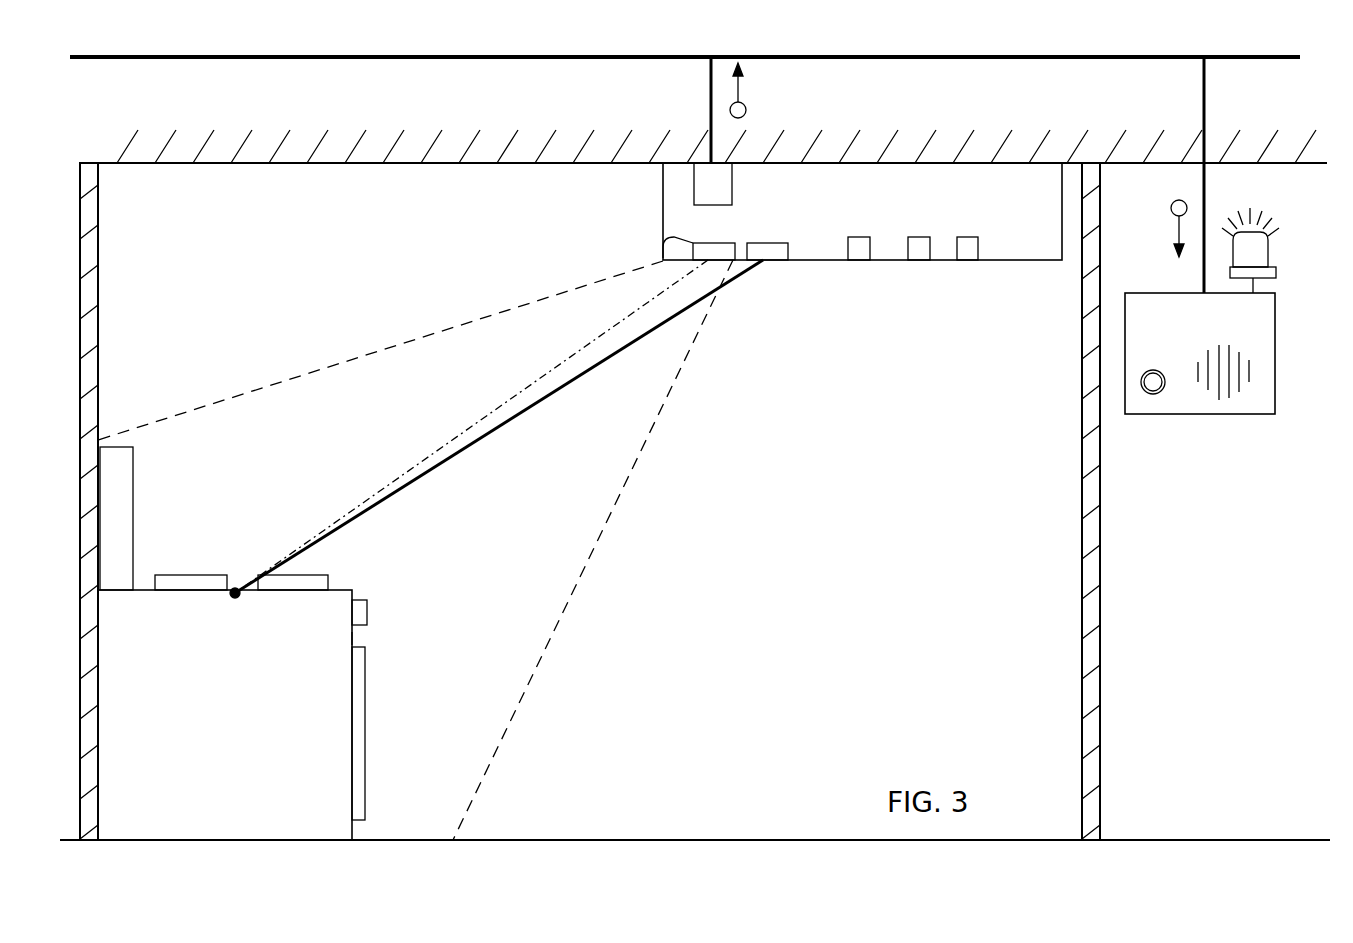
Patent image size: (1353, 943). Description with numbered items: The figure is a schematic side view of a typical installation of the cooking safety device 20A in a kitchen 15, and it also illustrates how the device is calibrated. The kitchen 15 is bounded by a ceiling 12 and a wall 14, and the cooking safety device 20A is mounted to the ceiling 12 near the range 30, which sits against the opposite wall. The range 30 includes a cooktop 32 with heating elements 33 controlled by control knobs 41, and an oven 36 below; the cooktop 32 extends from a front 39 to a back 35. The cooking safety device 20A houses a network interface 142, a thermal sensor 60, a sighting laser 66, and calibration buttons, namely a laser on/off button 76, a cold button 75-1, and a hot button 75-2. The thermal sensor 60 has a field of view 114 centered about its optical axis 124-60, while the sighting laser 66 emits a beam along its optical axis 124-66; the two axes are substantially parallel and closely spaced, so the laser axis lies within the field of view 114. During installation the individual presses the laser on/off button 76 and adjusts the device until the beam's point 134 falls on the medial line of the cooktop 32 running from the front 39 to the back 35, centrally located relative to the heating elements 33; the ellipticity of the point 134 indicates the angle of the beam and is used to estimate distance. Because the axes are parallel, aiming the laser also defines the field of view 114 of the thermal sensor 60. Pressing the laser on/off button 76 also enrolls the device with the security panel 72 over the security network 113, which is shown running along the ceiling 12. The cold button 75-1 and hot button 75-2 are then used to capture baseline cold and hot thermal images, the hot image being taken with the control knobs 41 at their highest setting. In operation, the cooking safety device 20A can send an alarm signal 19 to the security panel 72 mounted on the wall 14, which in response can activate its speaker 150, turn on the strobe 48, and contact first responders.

The ceiling 12 is at (698, 110).
The wall 14 is at (1100, 497).
The kitchen 15 is at (860, 541).
The security network 113 is at (555, 58).
The alarm signal 19 is at (738, 92).
The cooking safety device 20A is at (831, 251).
The network interface 142 is at (732, 193).
The thermal sensor 60 is at (657, 241).
The sighting laser 66 is at (760, 243).
The laser on/off button 76 is at (857, 260).
The cold button 75-1 is at (917, 260).
The hot button 75-2 is at (967, 260).
The field of view 114 is at (705, 318).
The optical axis of thermal sensor 124-60 is at (490, 400).
The optical axis of sighting laser 124-66 is at (447, 458).
The security panel 72 is at (1222, 261).
The speaker 150 is at (1219, 385).
The strobe 48 is at (1268, 248).
The range 30 is at (285, 598).
The back of cooktop 35 is at (117, 447).
The heating elements 33 is at (167, 575).
The cooktop 32 is at (338, 590).
The point 134 is at (240, 597).
The control knobs 41 is at (367, 610).
The front of cooktop 39 is at (352, 638).
The oven 36 is at (365, 705).